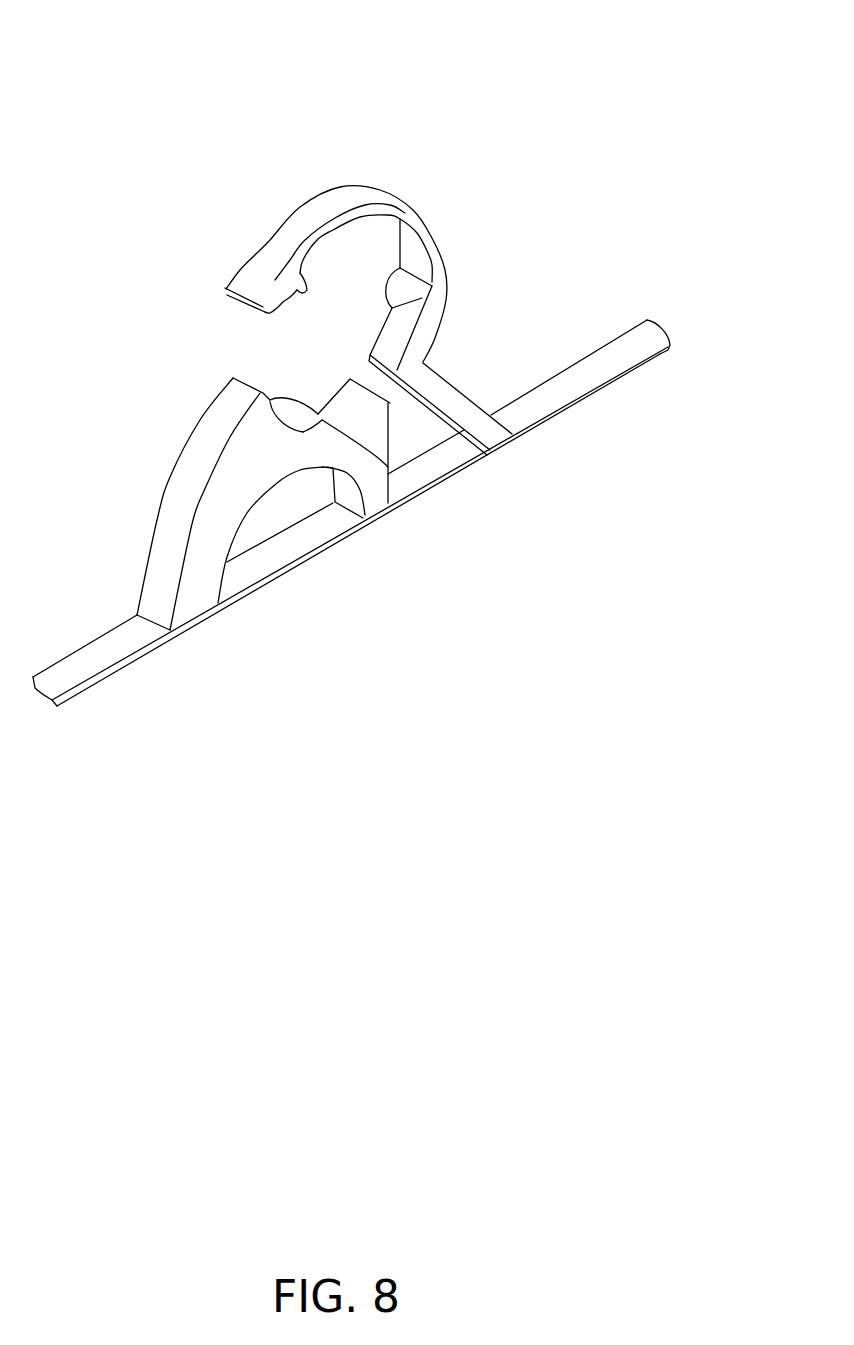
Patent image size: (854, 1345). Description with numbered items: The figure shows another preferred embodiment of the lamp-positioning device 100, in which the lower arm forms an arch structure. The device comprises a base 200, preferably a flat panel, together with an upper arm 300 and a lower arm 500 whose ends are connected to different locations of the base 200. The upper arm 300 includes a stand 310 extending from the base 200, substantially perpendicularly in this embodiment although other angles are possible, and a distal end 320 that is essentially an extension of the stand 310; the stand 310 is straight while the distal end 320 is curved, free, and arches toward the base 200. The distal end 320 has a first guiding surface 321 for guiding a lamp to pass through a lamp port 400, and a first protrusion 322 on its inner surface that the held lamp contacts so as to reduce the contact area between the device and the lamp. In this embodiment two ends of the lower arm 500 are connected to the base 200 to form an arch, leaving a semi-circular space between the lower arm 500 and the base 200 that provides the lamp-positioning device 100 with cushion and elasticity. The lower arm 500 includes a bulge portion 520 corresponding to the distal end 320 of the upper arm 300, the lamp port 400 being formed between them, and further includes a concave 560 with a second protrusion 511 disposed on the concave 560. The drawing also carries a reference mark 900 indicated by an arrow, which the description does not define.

The lamp-positioning device 100 is at (105, 34).
The base 200 is at (644, 341).
The upper arm 300 is at (376, 330).
The stand 310 is at (475, 390).
The distal end 320 is at (343, 196).
The first guiding surface 321 is at (227, 288).
The first protrusion 322 is at (293, 287).
The lamp port 400 is at (255, 331).
The lower arm 500 is at (247, 456).
The second protrusion 511 is at (390, 470).
The bulge portion 520 is at (253, 378).
The concave 560 is at (330, 382).
The insertion direction 900 is at (308, 528).